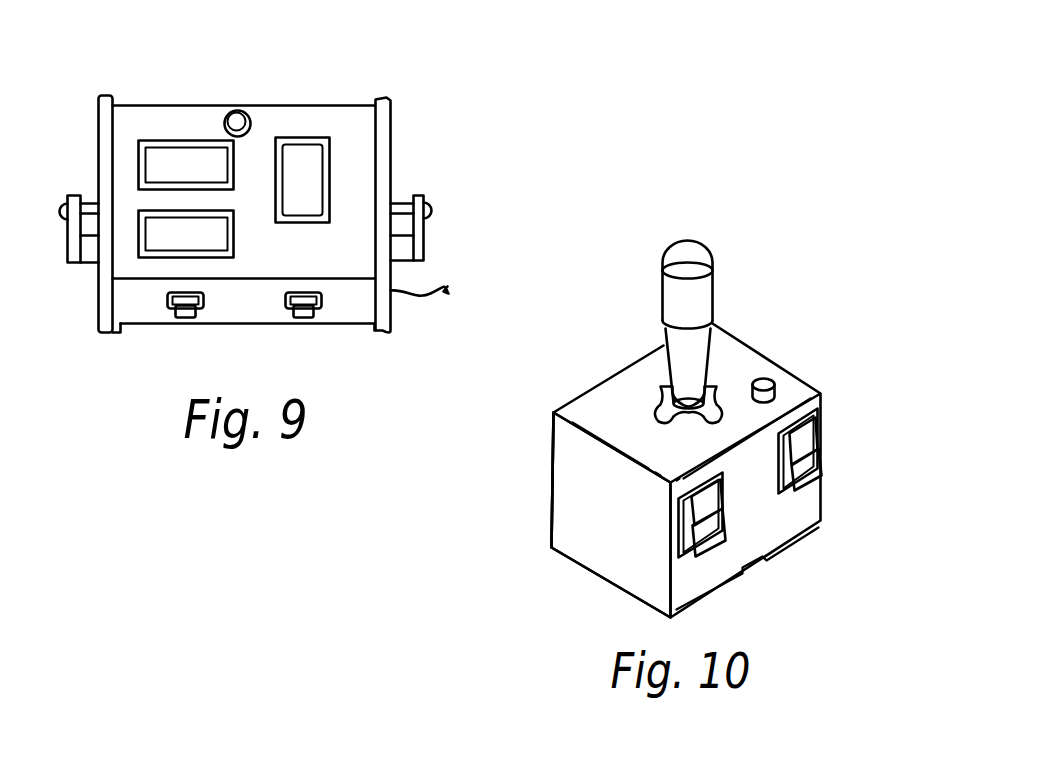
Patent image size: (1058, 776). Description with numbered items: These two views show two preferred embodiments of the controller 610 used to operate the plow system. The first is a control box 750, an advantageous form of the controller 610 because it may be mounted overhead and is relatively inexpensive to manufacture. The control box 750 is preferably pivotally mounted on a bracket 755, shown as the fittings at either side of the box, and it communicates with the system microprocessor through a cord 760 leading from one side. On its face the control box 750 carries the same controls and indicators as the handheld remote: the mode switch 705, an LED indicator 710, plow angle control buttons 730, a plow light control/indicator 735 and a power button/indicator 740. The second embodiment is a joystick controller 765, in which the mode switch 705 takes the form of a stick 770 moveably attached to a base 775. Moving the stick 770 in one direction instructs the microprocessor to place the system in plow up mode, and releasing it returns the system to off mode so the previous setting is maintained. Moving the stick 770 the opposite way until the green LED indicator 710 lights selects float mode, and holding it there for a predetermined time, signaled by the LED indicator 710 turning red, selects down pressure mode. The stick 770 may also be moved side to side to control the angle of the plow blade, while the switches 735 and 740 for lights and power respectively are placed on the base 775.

In FIG. 9, the controller 610 is at (443, 203).
In FIG. 10, the controller 610 is at (592, 373).
In FIG. 9, the mode switch 705 is at (304, 133).
In FIG. 9, the LED indicator 710 is at (228, 107).
In FIG. 10, the LED indicator 710 is at (766, 377).
In FIG. 9, the plow angle control buttons 730 is at (148, 225).
In FIG. 9, the plow light control/indicator 735 is at (185, 318).
In FIG. 10, the plow light control/indicator 735 is at (703, 533).
In FIG. 9, the power button/indicator 740 is at (303, 318).
In FIG. 10, the power button/indicator 740 is at (805, 462).
In FIG. 9, the control box 750 is at (389, 97).
In FIG. 9, the bracket 755 is at (432, 228).
In FIG. 9, the cord 760 is at (428, 300).
In FIG. 10, the joystick controller 765 is at (591, 512).
In FIG. 10, the stick 770 is at (700, 244).
In FIG. 10, the base 775 is at (563, 447).